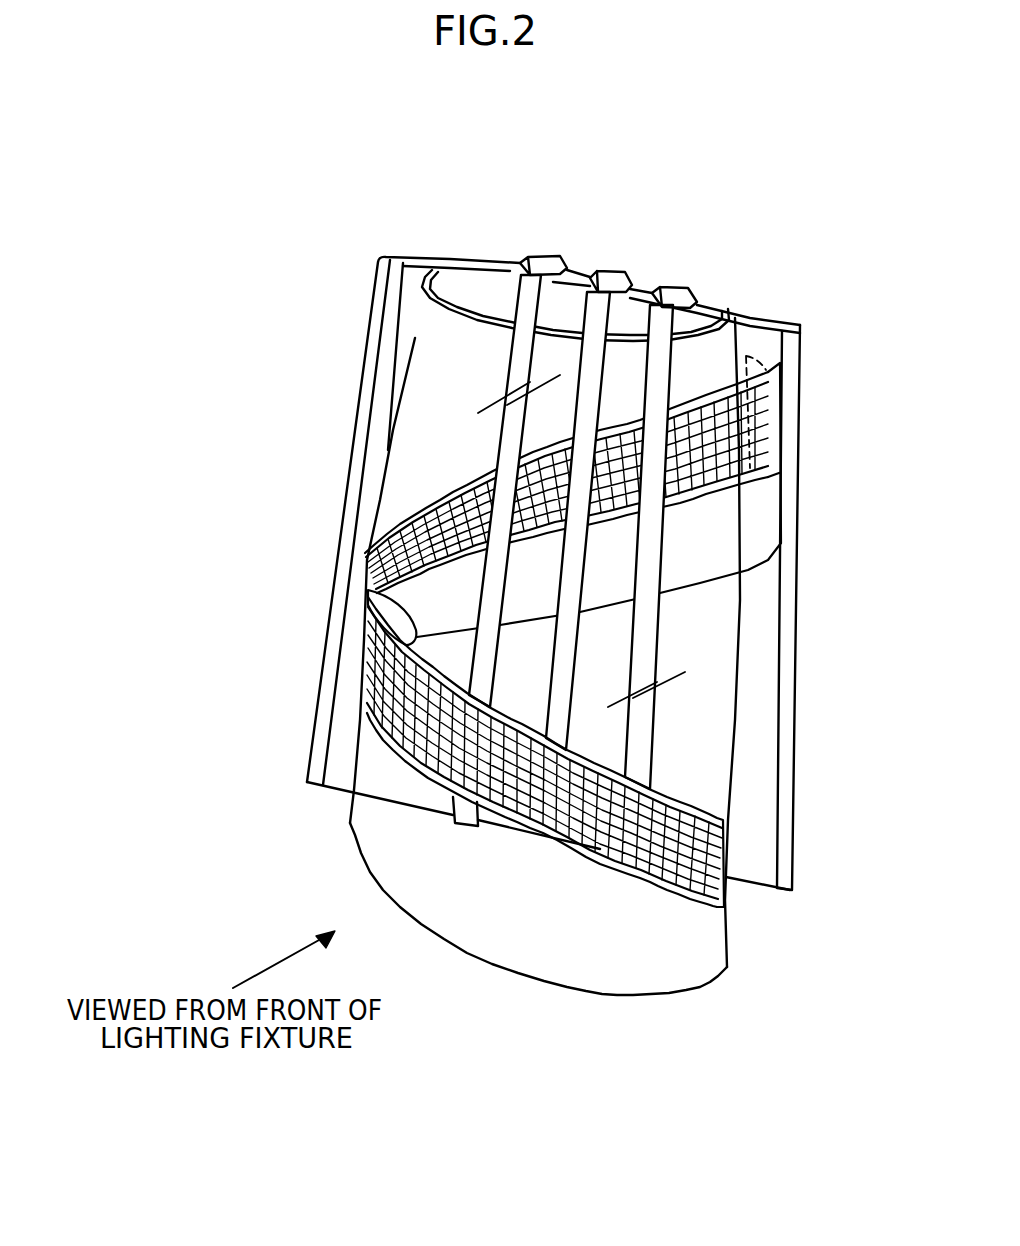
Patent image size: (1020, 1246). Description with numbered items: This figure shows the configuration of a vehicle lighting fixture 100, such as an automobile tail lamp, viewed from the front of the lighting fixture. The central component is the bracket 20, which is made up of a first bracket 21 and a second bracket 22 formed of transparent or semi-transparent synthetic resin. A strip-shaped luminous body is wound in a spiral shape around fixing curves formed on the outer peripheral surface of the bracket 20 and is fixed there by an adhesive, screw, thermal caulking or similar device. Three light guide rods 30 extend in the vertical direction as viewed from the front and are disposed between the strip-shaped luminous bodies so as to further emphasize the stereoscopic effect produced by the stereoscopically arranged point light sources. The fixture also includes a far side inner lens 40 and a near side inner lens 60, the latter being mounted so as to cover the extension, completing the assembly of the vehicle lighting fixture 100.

The vehicle lighting fixture 100 is at (585, 197).
The bracket 20 is at (741, 284).
The first bracket 21 is at (500, 967).
The second bracket 22 is at (797, 370).
The light guide rod 30 is at (523, 283).
The far side inner lens 40 is at (453, 503).
The near side inner lens 60 is at (640, 847).